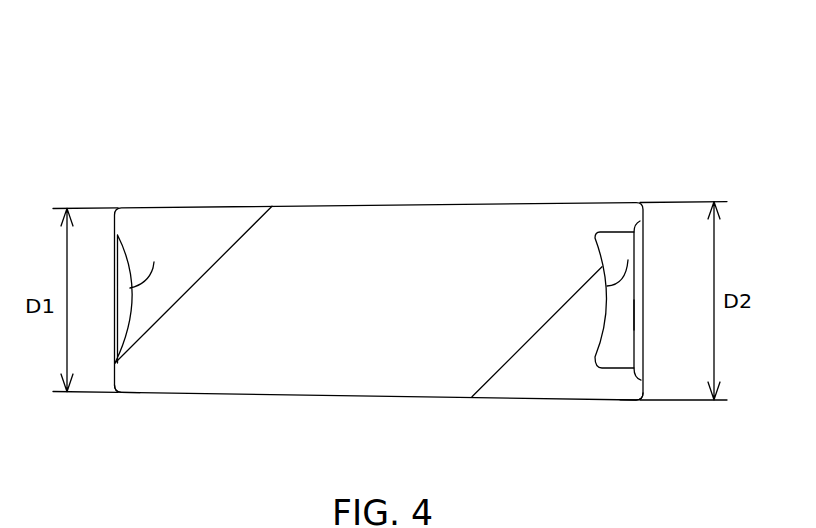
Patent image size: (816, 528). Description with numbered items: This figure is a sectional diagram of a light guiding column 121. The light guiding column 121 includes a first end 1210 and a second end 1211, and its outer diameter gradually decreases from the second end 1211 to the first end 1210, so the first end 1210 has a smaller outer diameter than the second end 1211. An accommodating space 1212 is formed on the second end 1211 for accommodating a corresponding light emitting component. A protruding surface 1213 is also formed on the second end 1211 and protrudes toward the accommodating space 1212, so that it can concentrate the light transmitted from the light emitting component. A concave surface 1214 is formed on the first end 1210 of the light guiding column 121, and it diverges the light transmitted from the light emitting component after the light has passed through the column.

The light guiding column 121 is at (180, 133).
The first end 1210 is at (120, 392).
The second end 1211 is at (641, 400).
The accommodating space 1212 is at (640, 297).
The protruding surface 1213 is at (628, 260).
The concave surface 1214 is at (154, 262).